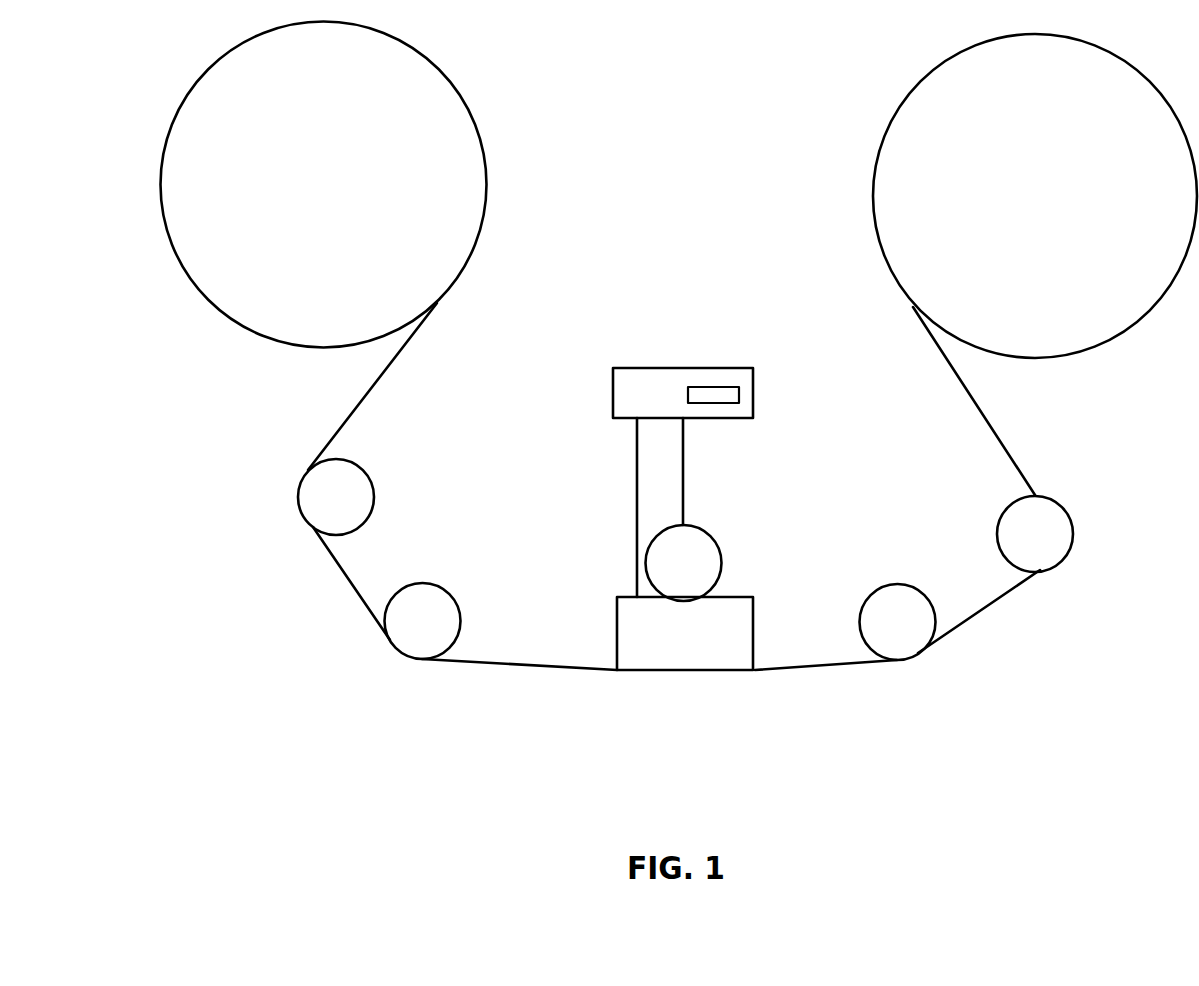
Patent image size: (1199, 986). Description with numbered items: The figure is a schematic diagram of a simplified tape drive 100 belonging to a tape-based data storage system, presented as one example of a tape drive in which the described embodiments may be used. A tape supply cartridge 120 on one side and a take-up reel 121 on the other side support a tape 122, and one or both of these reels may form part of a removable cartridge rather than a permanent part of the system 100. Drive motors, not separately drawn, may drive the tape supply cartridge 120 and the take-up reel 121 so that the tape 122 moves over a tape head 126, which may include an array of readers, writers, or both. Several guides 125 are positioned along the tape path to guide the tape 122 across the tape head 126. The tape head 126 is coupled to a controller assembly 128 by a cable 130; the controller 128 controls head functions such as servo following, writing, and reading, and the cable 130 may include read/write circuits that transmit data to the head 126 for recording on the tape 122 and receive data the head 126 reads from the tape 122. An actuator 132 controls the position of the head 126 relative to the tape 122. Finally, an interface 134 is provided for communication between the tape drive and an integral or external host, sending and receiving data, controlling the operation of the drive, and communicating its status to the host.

The tape drive 100 is at (283, 420).
The tape supply cartridge 120 is at (483, 150).
The take-up reel 121 is at (1137, 327).
The tape 122 is at (525, 667).
The guides 125 is at (423, 583).
The tape head 126 is at (753, 632).
The controller assembly 128 is at (682, 368).
The cable 130 is at (637, 558).
The actuator 132 is at (710, 530).
The interface 134 is at (726, 387).